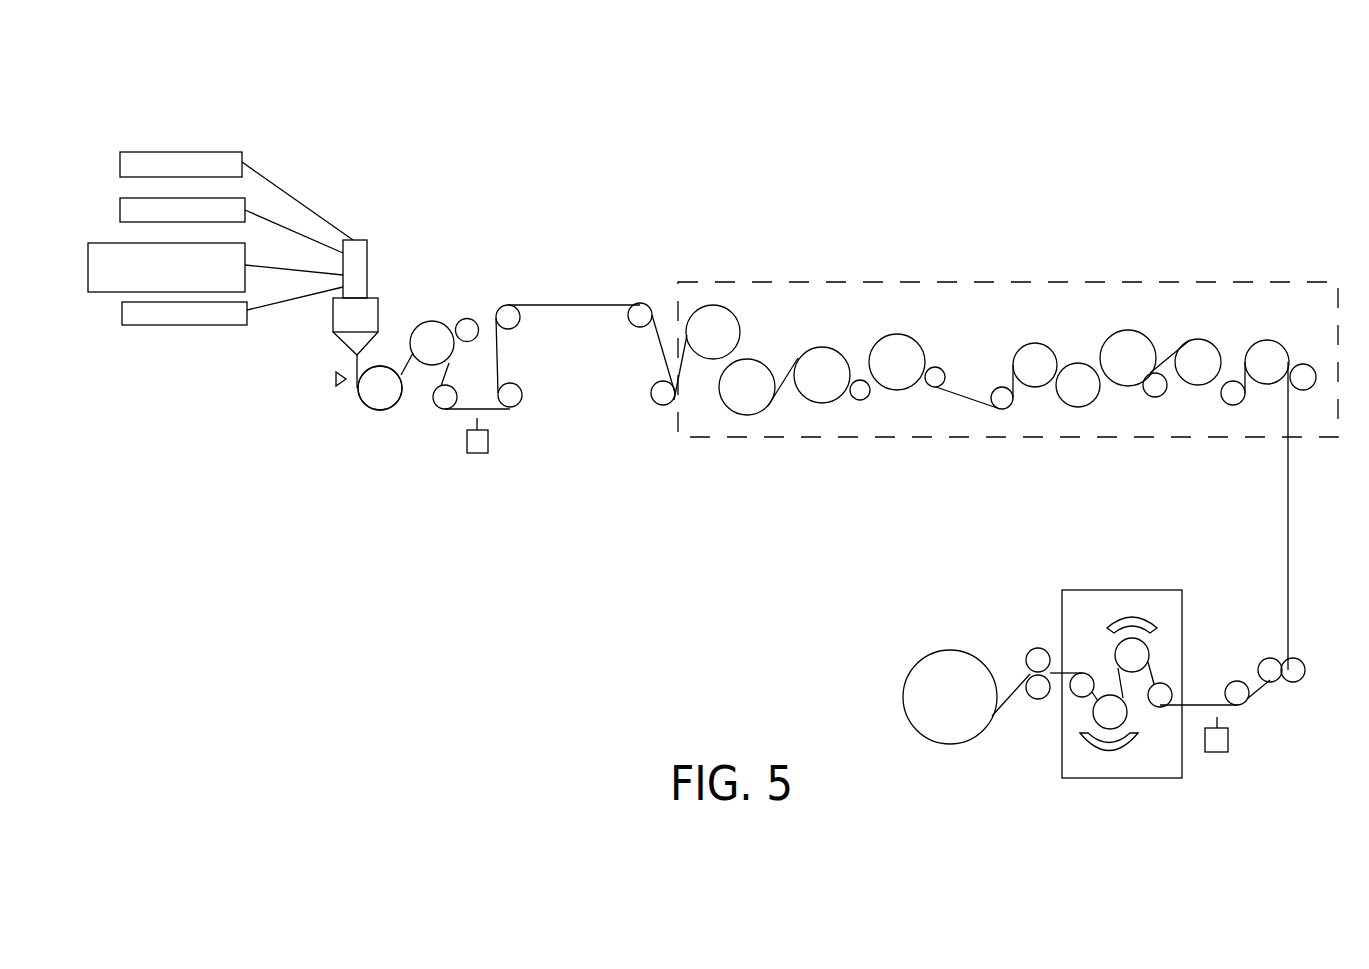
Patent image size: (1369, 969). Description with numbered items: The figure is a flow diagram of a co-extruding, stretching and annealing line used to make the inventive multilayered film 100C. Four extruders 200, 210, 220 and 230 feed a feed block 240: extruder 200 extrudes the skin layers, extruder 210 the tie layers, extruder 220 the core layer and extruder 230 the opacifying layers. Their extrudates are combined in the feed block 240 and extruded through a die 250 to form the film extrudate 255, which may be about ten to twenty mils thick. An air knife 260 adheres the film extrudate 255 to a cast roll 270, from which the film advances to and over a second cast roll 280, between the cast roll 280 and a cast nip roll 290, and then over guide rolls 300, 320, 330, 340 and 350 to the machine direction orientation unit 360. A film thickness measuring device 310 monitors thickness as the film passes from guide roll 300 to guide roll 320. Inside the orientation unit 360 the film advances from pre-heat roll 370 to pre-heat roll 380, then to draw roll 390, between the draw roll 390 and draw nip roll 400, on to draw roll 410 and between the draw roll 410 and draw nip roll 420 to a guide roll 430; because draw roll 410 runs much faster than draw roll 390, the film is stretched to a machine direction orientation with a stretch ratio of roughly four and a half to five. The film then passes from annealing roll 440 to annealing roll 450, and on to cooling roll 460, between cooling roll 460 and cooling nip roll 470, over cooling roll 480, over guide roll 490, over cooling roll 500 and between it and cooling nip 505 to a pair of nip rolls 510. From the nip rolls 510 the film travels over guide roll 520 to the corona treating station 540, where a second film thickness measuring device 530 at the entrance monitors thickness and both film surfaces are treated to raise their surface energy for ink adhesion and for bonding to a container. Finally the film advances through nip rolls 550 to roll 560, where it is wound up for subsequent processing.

The extruder 200 is at (178, 152).
The extruder 210 is at (120, 210).
The extruder 220 is at (93, 293).
The extruder 230 is at (167, 327).
The feed block 240 is at (367, 262).
The die 250 is at (333, 317).
The film extrudate 255 is at (340, 370).
The air knife 260 is at (338, 382).
The cast roll 270 is at (380, 410).
The cast roll 280 is at (425, 327).
The cast nip roll 290 is at (473, 320).
The guide roll 300 is at (440, 410).
The film thickness measuring device 310 is at (477, 453).
The guide roll 320 is at (517, 403).
The guide roll 330 is at (520, 318).
The guide roll 340 is at (630, 320).
The guide roll 350 is at (663, 407).
The machine direction orientation unit 360 is at (975, 282).
The pre-heat roll 370 is at (713, 307).
The pre-heat roll 380 is at (755, 363).
The draw roll 390 is at (825, 350).
The draw nip roll 400 is at (860, 400).
The draw roll 410 is at (875, 343).
The draw nip roll 420 is at (940, 370).
The guide roll 430 is at (1005, 405).
The annealing roll 440 is at (1037, 340).
The annealing roll 450 is at (1073, 400).
The cooling roll 460 is at (1112, 337).
The cooling nip roll 470 is at (1162, 395).
The cooling roll 480 is at (1203, 348).
The guide roll 490 is at (1232, 405).
The cooling roll 500 is at (1260, 342).
The cooling nip 505 is at (1302, 370).
The nip rolls 510 is at (1293, 657).
The guide roll 520 is at (1233, 683).
The film thickness measuring device 530 is at (1228, 740).
The corona treating station 540 is at (1153, 590).
The nip rolls 550 is at (1033, 650).
The roll 560 is at (925, 657).
The multilayered film 100C is at (1288, 555).